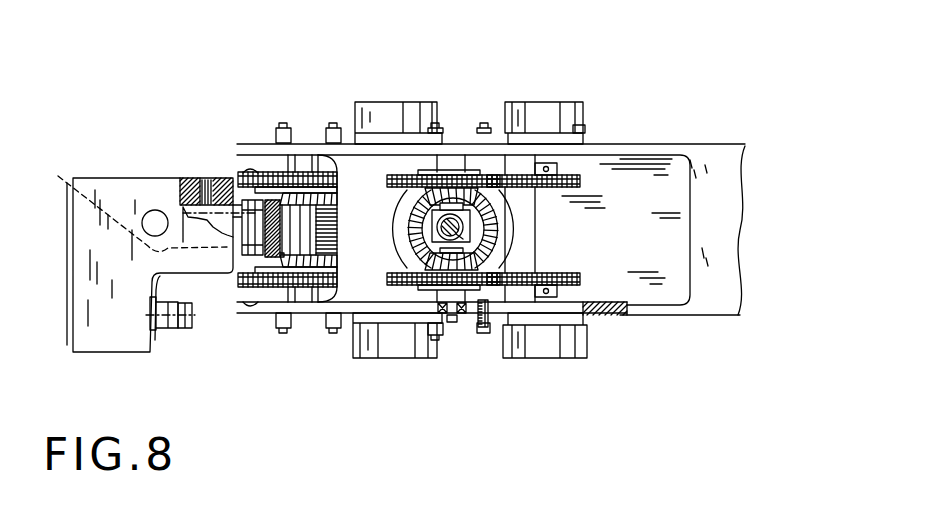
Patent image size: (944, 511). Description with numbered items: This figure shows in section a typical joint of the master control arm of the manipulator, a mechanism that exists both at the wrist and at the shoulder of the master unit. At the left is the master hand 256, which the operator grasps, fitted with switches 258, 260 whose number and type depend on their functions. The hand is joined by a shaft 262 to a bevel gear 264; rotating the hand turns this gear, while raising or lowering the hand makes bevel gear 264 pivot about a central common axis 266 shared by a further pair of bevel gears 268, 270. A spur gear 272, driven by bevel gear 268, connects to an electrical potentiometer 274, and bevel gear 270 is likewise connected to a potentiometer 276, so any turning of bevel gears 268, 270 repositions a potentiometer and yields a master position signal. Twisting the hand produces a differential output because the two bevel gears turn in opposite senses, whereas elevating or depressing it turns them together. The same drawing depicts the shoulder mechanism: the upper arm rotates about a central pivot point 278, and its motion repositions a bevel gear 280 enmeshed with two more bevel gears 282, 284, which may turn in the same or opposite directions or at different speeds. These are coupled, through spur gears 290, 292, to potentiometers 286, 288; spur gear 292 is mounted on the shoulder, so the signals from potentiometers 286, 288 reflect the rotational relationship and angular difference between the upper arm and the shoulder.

The master hand 256 is at (118, 178).
The switch 258 is at (160, 326).
The switch 260 is at (183, 328).
The shaft 262 is at (68, 180).
The bevel gear 264 is at (262, 218).
The central common axis 266 is at (312, 243).
The bevel gear 268 is at (300, 197).
The bevel gear 270 is at (290, 270).
The spur gear 272 is at (273, 192).
The electrical potentiometer 274 is at (397, 101).
The potentiometer 276 is at (390, 358).
The central pivot point 278 is at (476, 328).
The bevel gear 280 is at (478, 258).
The bevel gear 282 is at (487, 213).
The bevel gear 284 is at (422, 275).
The potentiometer 286 is at (537, 102).
The potentiometer 288 is at (588, 352).
The spur gear 290 is at (492, 175).
The spur gear 292 is at (578, 172).